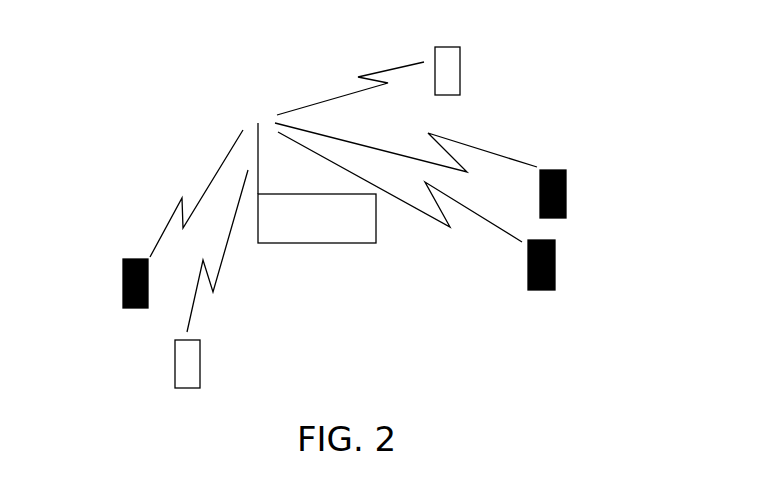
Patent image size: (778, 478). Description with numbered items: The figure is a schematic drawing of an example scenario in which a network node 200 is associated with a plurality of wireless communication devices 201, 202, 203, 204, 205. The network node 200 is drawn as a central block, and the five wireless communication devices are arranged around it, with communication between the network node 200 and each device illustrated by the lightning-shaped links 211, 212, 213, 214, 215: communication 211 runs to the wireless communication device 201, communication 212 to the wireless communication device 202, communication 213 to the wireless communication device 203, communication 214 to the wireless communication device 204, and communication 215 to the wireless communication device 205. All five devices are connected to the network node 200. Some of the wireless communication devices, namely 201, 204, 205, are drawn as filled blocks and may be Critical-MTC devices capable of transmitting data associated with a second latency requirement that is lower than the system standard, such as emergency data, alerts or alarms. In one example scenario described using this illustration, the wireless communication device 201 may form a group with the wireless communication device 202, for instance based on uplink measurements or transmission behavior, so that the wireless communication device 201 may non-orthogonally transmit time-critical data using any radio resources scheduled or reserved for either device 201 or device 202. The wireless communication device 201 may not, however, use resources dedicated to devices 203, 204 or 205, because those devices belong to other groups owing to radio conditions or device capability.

The network node 200 is at (317, 183).
The wireless communication device 201 is at (123, 283).
The wireless communication device 202 is at (200, 363).
The wireless communication device 203 is at (460, 70).
The wireless communication device 204 is at (566, 188).
The wireless communication device 205 is at (555, 258).
The communication 211 is at (222, 165).
The communication 212 is at (223, 263).
The communication 213 is at (382, 70).
The communication 214 is at (482, 148).
The communication 215 is at (488, 223).